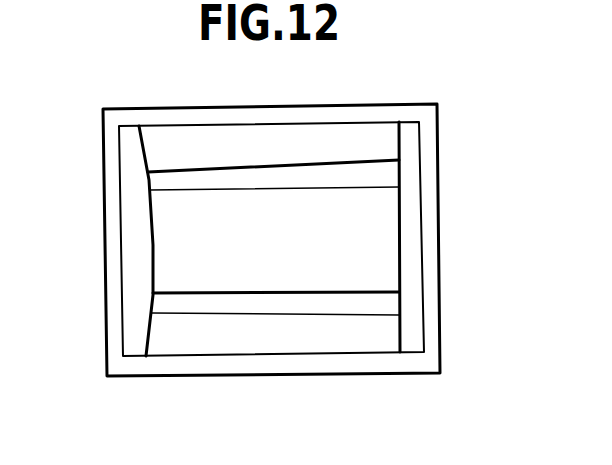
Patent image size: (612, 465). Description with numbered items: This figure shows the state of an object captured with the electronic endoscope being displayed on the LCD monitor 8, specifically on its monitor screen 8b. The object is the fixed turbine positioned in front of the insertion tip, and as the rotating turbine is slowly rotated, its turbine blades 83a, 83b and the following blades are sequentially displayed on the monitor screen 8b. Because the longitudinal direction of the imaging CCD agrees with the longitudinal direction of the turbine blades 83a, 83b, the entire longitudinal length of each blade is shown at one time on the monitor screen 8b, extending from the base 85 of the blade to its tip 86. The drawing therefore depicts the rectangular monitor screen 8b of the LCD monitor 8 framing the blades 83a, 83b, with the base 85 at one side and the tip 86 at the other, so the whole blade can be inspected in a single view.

The LCD monitor 8 is at (103, 210).
The monitor screen 8b is at (422, 155).
The turbine blade 83a is at (310, 263).
The turbine blade 83b is at (352, 139).
The base 85 is at (155, 252).
The tip 86 is at (402, 237).